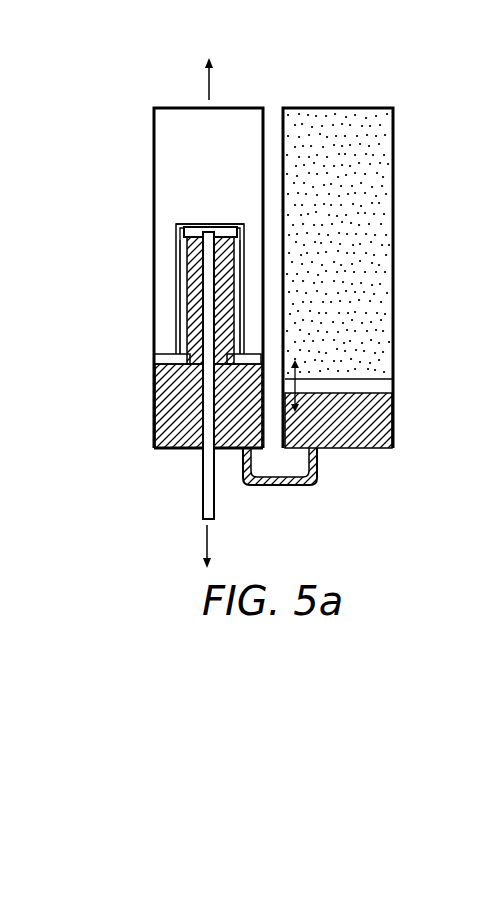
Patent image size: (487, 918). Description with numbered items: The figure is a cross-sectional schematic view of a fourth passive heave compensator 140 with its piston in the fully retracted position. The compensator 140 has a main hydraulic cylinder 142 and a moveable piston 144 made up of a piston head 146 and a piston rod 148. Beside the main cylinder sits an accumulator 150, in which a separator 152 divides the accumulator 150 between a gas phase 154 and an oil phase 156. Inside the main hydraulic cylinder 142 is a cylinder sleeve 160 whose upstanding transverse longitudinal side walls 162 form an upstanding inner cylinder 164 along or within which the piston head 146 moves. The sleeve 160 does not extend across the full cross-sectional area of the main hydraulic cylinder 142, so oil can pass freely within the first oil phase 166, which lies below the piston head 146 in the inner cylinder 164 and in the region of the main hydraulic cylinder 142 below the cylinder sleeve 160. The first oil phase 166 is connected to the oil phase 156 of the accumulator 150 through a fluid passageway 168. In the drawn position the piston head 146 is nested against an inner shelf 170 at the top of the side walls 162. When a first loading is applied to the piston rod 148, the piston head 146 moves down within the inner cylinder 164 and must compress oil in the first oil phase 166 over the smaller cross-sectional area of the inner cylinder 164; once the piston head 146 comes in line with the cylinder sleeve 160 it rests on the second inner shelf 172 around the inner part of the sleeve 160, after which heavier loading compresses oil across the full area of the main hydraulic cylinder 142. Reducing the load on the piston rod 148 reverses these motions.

The fourth passive heave compensator 140 is at (146, 99).
The main hydraulic cylinder 142 is at (154, 145).
The moveable piston 144 is at (200, 430).
The piston head 146 is at (207, 226).
The piston rod 148 is at (203, 504).
The accumulator 150 is at (393, 217).
The separator 152 is at (383, 381).
The gas phase 154 is at (382, 145).
The oil phase 156 is at (383, 416).
The cylinder sleeve 160 is at (162, 358).
The upstanding transverse longitudinal side walls 162 is at (176, 250).
The upstanding inner cylinder 164 is at (188, 281).
The first oil phase 166 is at (163, 385).
The fluid passageway 168 is at (285, 490).
The inner shelf 170 is at (185, 224).
The second inner shelf 172 is at (183, 349).